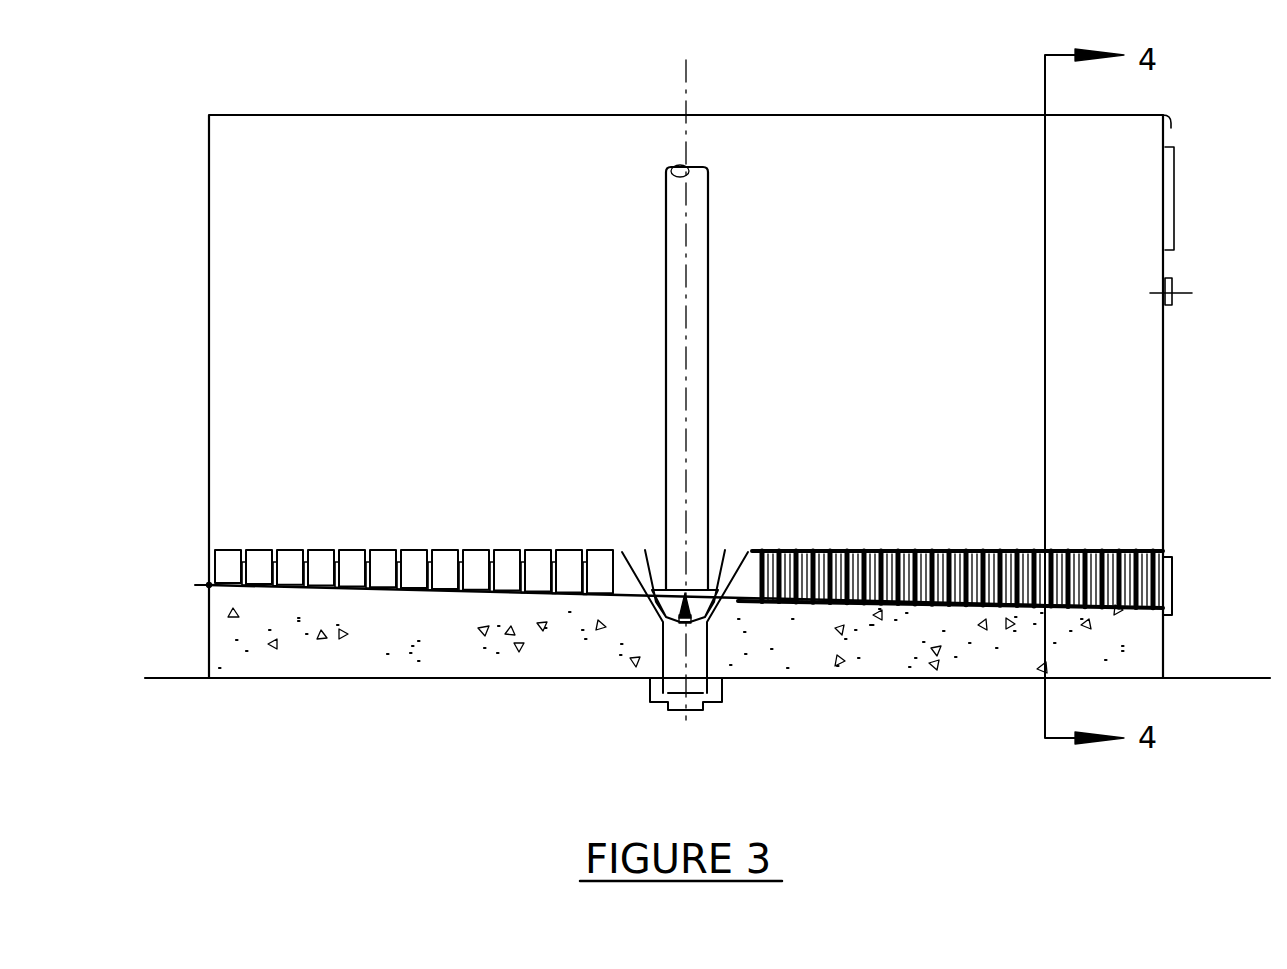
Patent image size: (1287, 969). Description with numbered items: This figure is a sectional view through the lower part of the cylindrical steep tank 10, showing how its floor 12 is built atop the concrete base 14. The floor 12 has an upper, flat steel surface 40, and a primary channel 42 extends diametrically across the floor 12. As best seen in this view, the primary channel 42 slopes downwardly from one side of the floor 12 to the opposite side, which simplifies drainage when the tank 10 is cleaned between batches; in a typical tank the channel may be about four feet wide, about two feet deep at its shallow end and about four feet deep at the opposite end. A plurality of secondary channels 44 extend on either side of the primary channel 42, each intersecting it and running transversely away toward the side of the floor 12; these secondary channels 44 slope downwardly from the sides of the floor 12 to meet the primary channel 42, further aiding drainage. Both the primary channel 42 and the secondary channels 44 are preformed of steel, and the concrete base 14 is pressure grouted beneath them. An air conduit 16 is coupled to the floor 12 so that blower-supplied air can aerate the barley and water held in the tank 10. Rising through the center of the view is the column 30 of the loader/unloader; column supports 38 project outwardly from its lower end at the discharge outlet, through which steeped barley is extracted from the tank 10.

The steep tank 10 is at (209, 343).
The floor 12 is at (532, 548).
The concrete base 14 is at (400, 658).
The air conduit 16 is at (1174, 582).
The column 30 is at (708, 407).
The column supports 38 is at (645, 552).
The upper flat steel surface 40 is at (265, 550).
The primary channel 42 is at (230, 584).
The secondary channels 44 is at (369, 552).